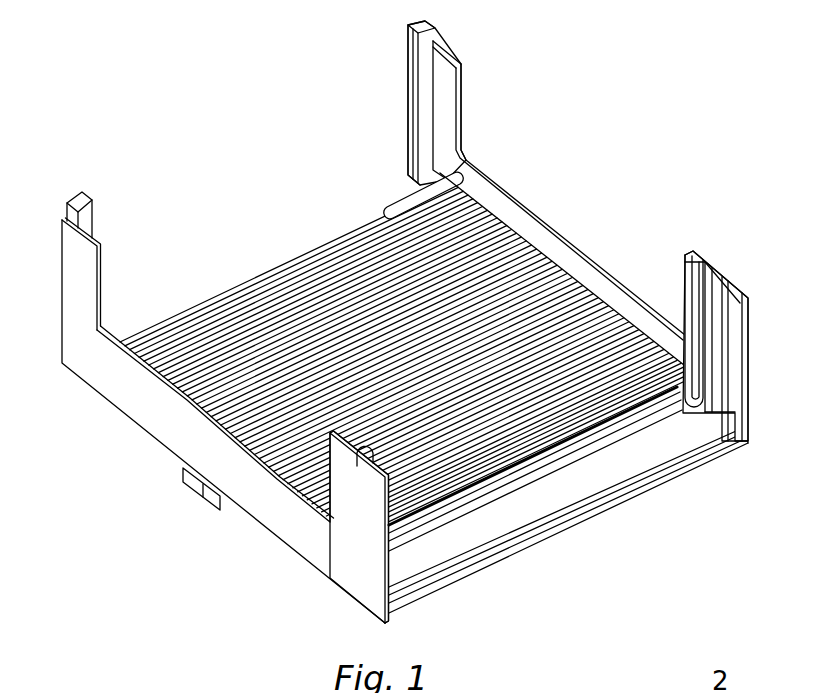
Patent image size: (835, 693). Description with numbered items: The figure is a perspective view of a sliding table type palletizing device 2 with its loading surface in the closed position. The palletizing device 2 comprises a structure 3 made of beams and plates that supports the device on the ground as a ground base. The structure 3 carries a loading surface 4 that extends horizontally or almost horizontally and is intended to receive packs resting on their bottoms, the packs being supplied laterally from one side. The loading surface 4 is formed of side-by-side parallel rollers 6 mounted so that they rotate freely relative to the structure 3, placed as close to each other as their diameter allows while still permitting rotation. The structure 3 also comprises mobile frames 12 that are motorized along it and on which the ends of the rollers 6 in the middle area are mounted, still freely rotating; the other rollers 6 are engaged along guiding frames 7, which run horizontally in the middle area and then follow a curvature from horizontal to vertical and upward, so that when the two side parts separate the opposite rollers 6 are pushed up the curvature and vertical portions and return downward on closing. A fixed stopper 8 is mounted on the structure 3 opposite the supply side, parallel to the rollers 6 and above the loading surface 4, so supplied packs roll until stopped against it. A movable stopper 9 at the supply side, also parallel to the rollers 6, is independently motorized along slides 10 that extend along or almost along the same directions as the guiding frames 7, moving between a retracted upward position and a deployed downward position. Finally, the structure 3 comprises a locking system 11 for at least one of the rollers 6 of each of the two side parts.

The palletizing device 2 is at (245, 558).
The structure 3 is at (135, 395).
The loading surface 4 is at (350, 287).
The rollers 6 is at (400, 230).
The guiding frames 7 is at (480, 218).
The fixed stopper 8 is at (240, 277).
The movable stopper 9 is at (590, 420).
The slides 10 is at (684, 337).
The locking system 11 is at (195, 506).
The mobile frames 12 is at (700, 418).